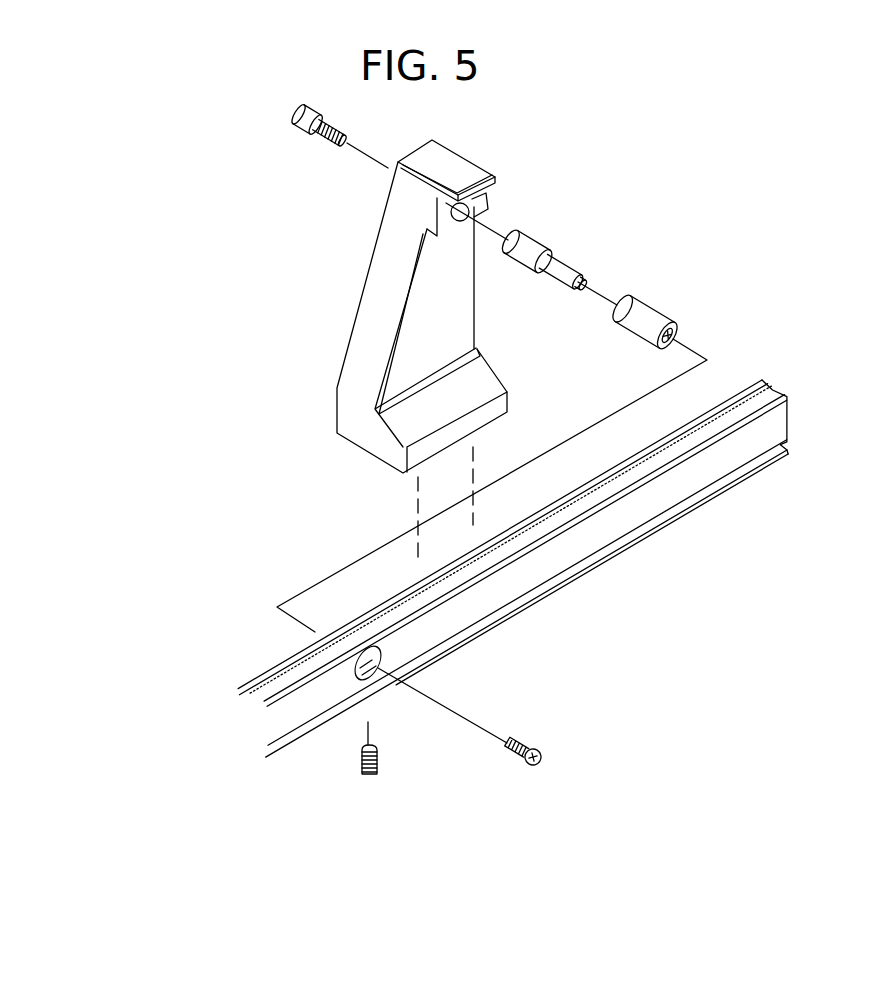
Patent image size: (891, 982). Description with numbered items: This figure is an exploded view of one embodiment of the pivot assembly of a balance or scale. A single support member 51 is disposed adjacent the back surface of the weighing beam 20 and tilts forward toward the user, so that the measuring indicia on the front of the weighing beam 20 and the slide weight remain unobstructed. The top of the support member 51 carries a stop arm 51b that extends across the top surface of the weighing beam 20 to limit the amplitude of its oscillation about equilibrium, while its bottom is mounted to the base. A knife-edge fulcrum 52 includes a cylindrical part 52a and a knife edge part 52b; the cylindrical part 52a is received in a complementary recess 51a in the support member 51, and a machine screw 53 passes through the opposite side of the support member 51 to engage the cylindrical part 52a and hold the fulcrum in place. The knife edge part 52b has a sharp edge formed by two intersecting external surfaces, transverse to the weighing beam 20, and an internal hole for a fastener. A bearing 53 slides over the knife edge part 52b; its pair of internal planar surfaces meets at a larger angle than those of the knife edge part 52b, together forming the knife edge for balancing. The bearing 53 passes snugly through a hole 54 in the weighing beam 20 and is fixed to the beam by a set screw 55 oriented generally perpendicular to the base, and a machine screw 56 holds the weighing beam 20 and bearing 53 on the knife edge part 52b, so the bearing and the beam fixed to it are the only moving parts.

The weighing beam 20 is at (771, 391).
The support member 51 is at (385, 263).
The recess 51a is at (458, 226).
The stop arm 51b is at (457, 163).
The knife-edge fulcrum 52 is at (545, 238).
The cylindrical part 52a is at (519, 232).
The knife edge part 52b is at (563, 287).
The machine screw / bearing 53 is at (300, 116).
The hole 54 is at (383, 650).
The set screw 55 is at (358, 760).
The machine screw 56 is at (545, 748).